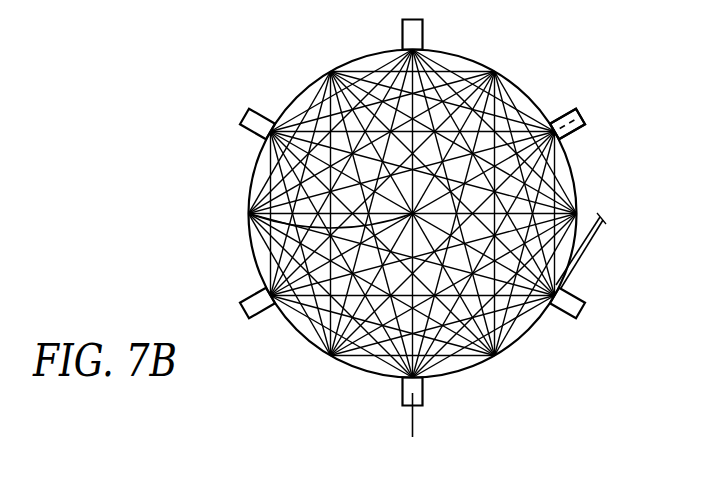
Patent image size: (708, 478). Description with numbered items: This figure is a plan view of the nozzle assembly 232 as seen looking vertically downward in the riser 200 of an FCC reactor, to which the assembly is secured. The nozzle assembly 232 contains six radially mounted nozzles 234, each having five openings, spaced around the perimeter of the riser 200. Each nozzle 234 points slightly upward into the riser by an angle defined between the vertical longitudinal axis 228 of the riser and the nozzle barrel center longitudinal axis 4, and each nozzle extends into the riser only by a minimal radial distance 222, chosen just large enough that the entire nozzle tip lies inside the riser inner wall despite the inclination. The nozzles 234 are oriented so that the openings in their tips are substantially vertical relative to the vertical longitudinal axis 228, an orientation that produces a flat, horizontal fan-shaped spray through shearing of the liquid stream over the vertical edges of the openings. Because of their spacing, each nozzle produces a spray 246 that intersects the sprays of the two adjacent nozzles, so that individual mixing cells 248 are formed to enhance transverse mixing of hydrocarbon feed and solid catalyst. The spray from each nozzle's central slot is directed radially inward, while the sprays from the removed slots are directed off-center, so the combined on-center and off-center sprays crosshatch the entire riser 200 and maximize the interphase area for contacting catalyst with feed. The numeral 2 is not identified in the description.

The nozzle assembly 232 is at (582, 51).
The optical transceiver node 2 is at (559, 116).
The nozzle barrel center longitudinal axis 4 is at (578, 110).
The nozzle 234 is at (565, 131).
The mixing cell 248 is at (542, 178).
The radial distance 222 is at (606, 224).
The spray 246 is at (544, 320).
The riser section 200 is at (468, 368).
The vertical longitudinal axis 228 is at (248, 214).